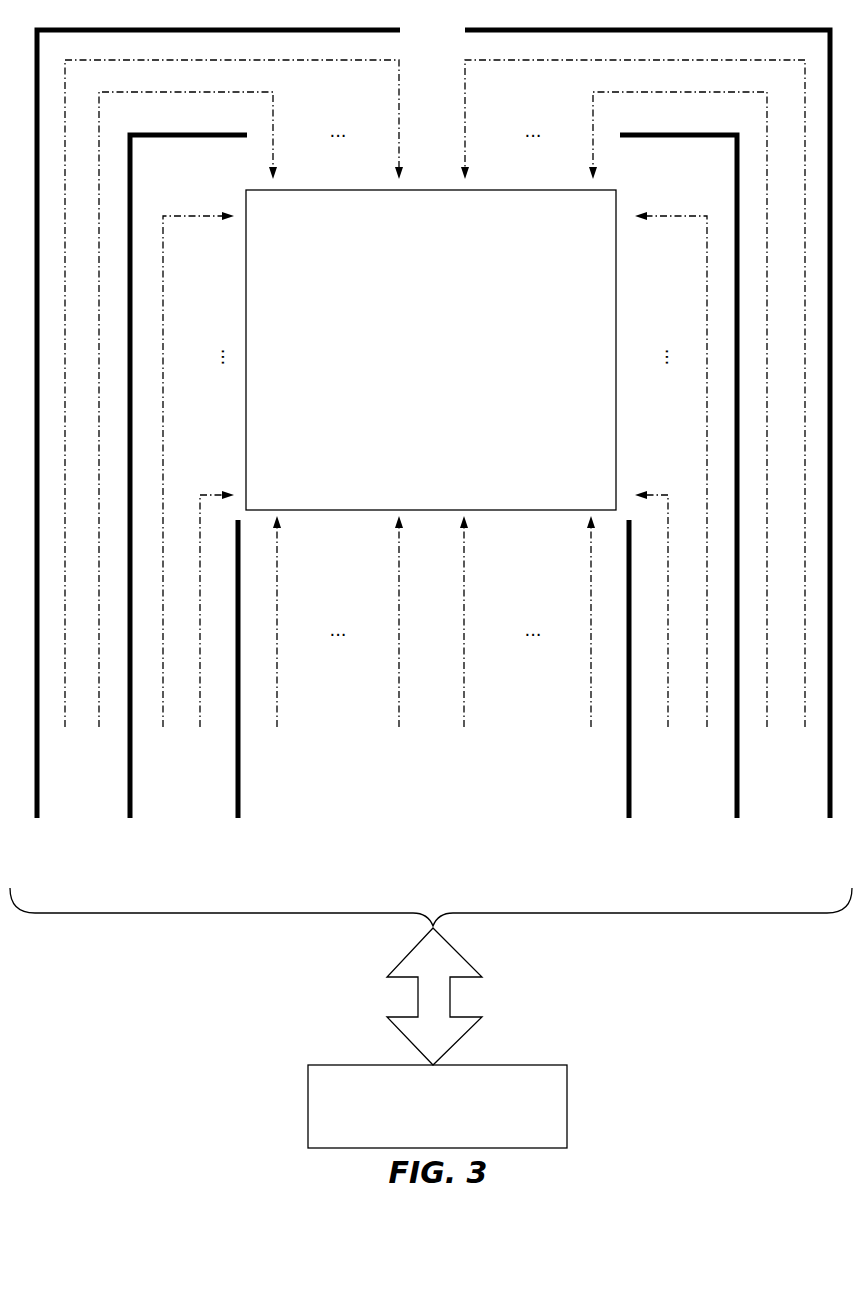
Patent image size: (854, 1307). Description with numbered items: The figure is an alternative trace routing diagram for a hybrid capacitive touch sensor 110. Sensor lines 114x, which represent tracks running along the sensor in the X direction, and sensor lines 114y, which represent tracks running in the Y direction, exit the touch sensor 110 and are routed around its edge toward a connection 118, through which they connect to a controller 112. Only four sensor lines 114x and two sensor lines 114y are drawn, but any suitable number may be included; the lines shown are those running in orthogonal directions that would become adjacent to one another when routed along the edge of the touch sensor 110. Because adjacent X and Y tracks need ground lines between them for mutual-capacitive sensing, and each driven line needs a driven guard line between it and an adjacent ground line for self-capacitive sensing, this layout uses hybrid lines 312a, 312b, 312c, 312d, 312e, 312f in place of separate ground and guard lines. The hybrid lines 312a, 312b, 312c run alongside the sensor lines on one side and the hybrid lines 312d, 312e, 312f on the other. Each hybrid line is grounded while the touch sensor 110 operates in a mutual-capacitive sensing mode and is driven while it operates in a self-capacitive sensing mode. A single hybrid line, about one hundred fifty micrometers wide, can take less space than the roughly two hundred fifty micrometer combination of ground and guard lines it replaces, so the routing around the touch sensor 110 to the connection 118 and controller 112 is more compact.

The hybrid capacitive touch sensor 110 is at (431, 350).
The controller 112 is at (298, 1102).
The connection 118 is at (372, 967).
The sensor lines 114x is at (435, 412).
The sensor lines 114y is at (435, 488).
The hybrid line 312a is at (214, 448).
The hybrid line 312b is at (184, 500).
The hybrid line 312c is at (238, 692).
The hybrid line 312d is at (629, 693).
The hybrid line 312e is at (682, 500).
The hybrid line 312f is at (651, 447).